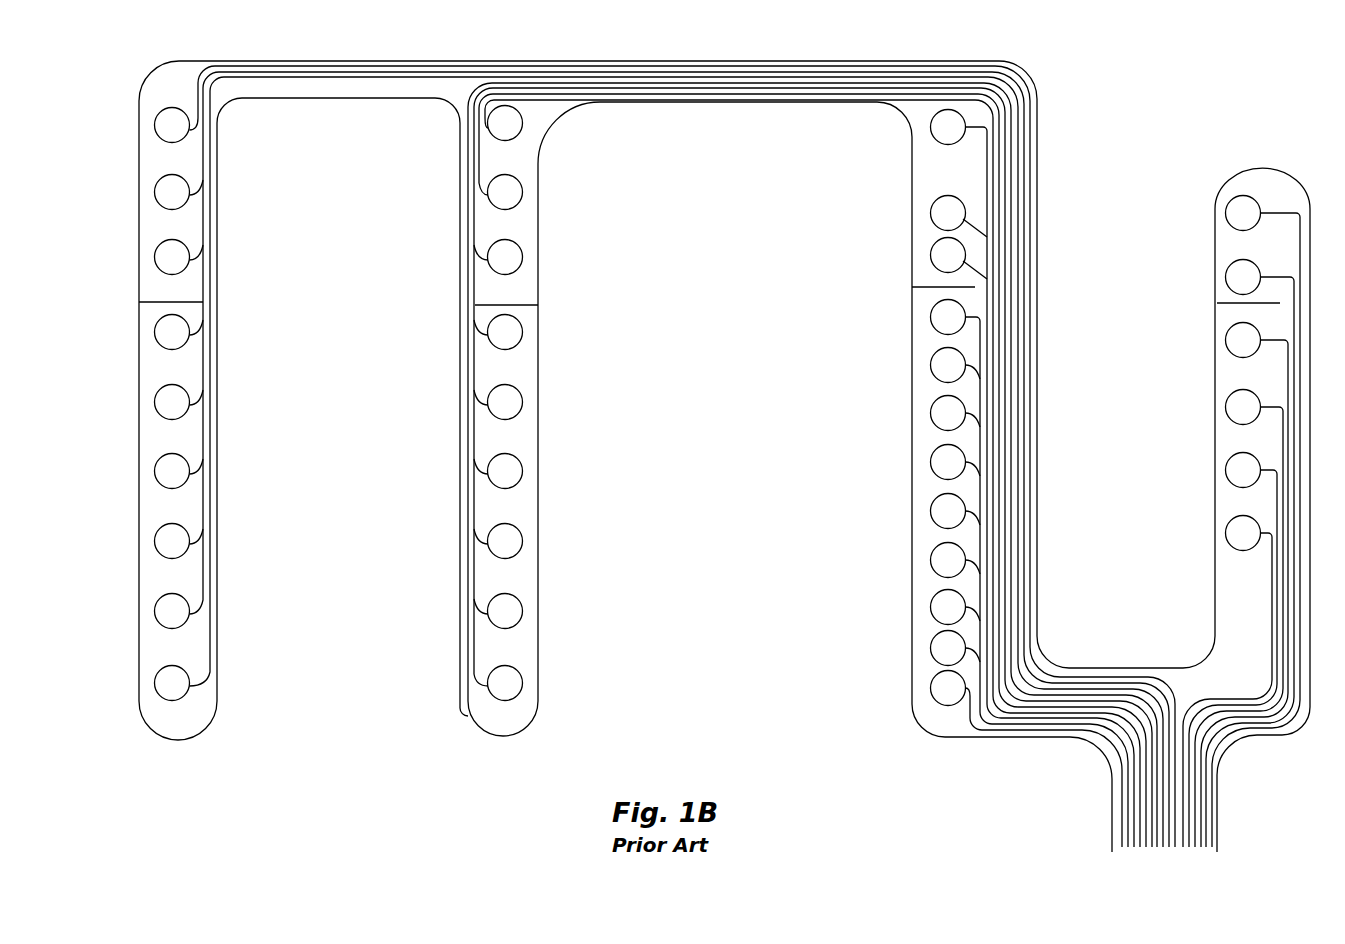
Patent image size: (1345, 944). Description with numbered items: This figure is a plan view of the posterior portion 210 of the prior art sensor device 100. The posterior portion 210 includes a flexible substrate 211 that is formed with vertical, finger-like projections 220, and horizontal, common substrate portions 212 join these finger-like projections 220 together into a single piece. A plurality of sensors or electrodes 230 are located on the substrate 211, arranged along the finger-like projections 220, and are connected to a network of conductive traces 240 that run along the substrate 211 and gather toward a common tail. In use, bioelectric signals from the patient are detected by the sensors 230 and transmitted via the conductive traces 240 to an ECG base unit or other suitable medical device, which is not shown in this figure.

The prior art device 100 is at (1245, 82).
The posterior portion 210 is at (262, 796).
The flexible substrate 211 is at (538, 688).
The horizontal, common substrate portions 212 is at (272, 61).
The finger-like projections 220 is at (1043, 183).
The sensors or electrodes 230 is at (1243, 187).
The conductive traces 240 is at (1027, 558).